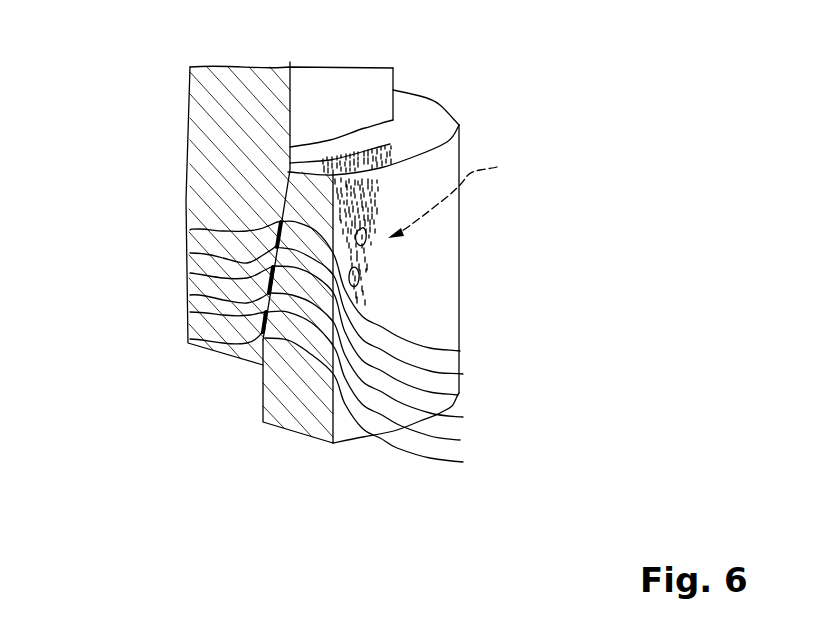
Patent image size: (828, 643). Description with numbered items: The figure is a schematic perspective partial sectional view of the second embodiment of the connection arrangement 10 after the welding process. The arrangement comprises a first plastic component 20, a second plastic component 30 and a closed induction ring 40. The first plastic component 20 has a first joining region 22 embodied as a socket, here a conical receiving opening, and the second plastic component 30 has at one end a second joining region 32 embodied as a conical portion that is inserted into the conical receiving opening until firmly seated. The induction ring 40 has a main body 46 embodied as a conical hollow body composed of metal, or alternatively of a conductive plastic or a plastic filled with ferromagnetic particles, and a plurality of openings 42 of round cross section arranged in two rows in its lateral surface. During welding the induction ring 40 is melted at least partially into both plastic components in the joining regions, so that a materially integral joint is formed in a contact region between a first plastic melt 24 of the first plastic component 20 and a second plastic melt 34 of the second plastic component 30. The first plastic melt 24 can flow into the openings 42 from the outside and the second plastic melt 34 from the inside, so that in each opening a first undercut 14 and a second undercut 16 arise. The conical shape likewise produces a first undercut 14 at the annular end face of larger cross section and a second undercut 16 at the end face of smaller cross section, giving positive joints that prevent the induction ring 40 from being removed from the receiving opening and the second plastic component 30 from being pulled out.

The connection arrangement 10 is at (205, 203).
The first undercut 14 is at (460, 351).
The second undercut 16 is at (190, 253).
The first plastic component 20 is at (300, 418).
The first joining region 22 is at (262, 190).
The first plastic melt 24 is at (463, 374).
The second plastic component 30 is at (374, 92).
The second joining region 32 is at (297, 164).
The second plastic melt 34 is at (190, 230).
The induction ring 40 is at (458, 194).
The openings 42 is at (365, 245).
The main body 46 is at (365, 274).